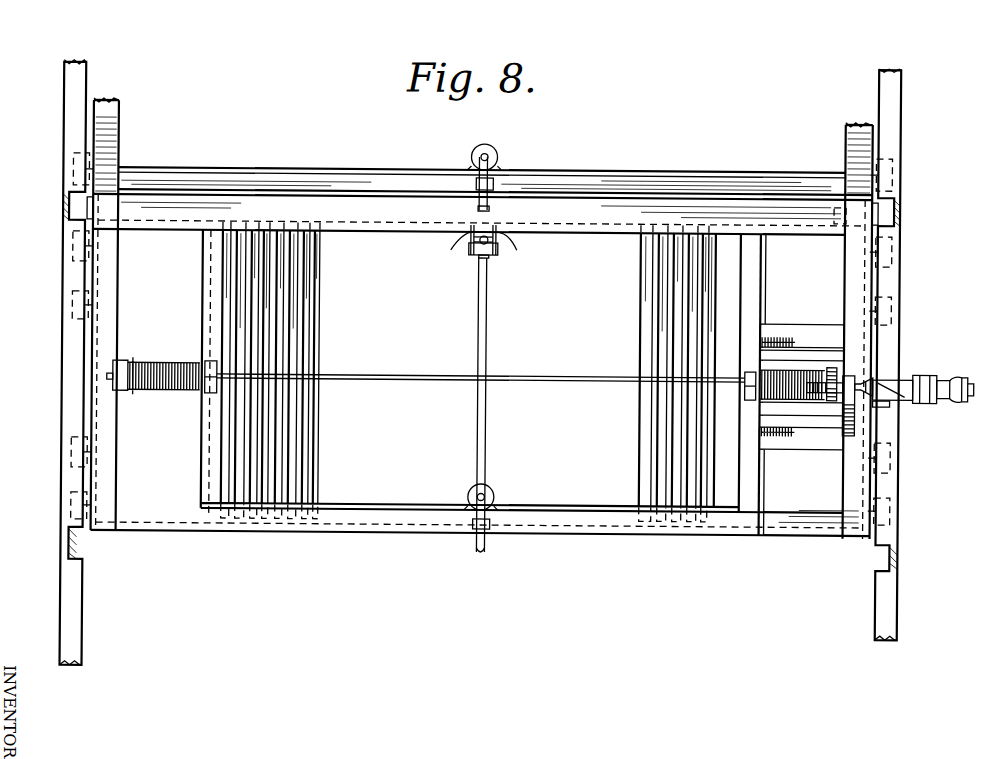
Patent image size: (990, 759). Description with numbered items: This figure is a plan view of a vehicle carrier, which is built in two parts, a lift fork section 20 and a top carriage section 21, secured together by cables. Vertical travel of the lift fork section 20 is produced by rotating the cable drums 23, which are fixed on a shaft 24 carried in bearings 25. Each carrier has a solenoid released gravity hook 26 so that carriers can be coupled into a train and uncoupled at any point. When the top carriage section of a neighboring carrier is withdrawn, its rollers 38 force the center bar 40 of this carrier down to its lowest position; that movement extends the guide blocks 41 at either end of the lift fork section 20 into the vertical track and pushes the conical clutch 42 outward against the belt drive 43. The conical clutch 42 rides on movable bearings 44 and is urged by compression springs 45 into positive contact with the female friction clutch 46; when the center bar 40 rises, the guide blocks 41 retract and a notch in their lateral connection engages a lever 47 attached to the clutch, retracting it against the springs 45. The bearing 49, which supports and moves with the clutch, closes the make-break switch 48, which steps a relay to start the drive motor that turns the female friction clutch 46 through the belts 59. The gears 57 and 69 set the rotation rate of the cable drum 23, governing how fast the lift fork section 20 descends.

The lift fork section 20 is at (350, 533).
The top carriage section 21 is at (358, 505).
The cable drum 23 is at (175, 366).
The shaft 24 is at (541, 376).
The bearing 25 is at (207, 395).
The solenoid released gravity hook 26 is at (497, 160).
The roller 38 is at (494, 254).
The center bar 40 is at (470, 247).
The guide block 41 is at (86, 207).
The conical clutch 42 is at (871, 380).
The belt drive 43 is at (926, 401).
The movable bearing 44 is at (823, 334).
The compression spring 45 is at (762, 338).
The female friction clutch 46 is at (833, 212).
The lever 47 is at (843, 266).
The switch 48 is at (888, 404).
The bearing 49 is at (856, 400).
The gear 57 is at (819, 397).
The belt 59 is at (946, 374).
The gear 69 is at (829, 370).